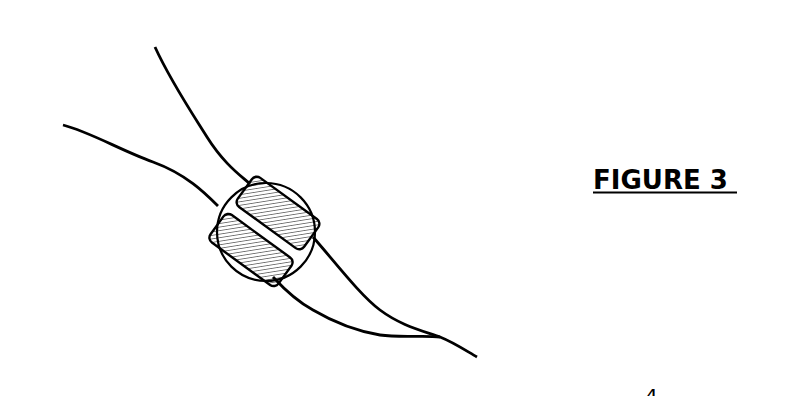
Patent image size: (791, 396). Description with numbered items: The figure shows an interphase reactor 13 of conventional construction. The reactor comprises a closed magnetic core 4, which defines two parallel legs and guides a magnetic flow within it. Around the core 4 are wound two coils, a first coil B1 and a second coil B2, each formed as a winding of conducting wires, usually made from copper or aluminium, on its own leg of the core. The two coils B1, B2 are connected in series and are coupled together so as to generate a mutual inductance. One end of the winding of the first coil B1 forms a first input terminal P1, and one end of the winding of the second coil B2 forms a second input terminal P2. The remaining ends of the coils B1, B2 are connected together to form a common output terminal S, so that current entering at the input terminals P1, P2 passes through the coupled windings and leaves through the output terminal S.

The interphase reactor 13 is at (323, 193).
The magnetic core 4 is at (305, 258).
The first coil B1 is at (278, 197).
The second coil B2 is at (233, 255).
The first input terminal P1 is at (195, 103).
The second input terminal P2 is at (122, 160).
The output terminal S is at (383, 305).